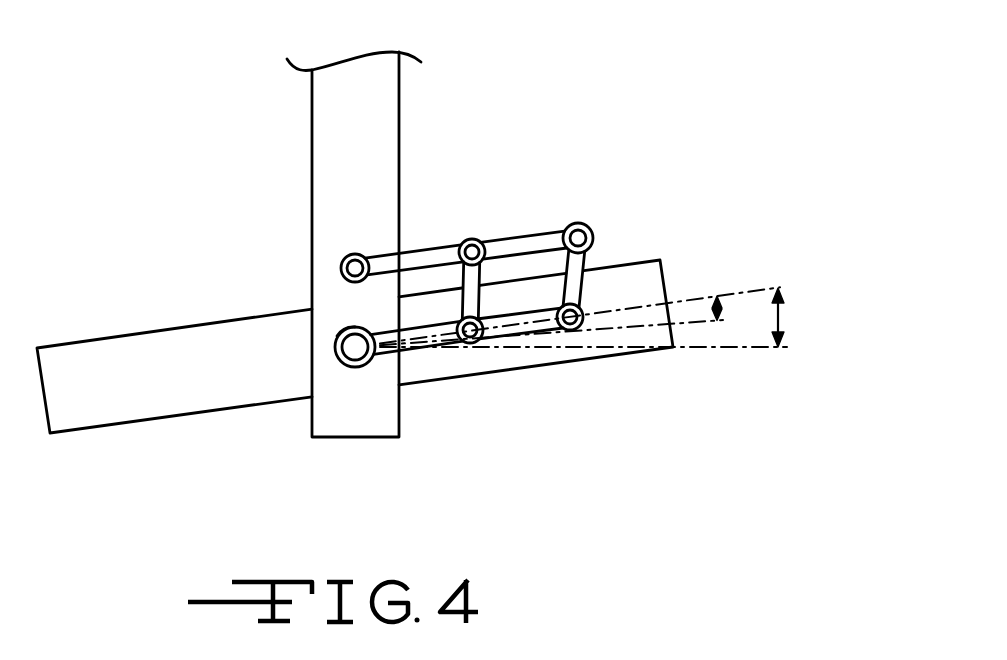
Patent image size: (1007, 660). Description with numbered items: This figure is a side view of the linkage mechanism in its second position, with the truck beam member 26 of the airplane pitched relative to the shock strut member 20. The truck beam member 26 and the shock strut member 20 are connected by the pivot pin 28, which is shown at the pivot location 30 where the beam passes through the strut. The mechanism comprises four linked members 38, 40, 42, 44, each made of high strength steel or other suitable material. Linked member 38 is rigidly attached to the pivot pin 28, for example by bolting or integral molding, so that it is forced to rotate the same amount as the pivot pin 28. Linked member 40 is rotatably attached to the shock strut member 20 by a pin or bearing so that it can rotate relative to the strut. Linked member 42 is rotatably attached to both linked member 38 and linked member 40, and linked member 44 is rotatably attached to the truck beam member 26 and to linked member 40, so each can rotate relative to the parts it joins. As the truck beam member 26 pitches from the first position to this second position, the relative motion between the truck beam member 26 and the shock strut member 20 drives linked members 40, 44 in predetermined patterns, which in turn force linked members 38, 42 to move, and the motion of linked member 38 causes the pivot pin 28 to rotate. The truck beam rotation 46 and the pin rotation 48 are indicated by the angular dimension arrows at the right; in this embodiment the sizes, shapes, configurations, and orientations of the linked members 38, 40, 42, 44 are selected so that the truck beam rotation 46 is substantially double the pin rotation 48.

The shock strut member 20 is at (300, 110).
The truck beam member 26 is at (163, 318).
The pivot pin 28 is at (328, 336).
The pivot 30 is at (353, 349).
The linked member 38 is at (402, 355).
The linked member 40 is at (435, 258).
The linked member 42 is at (478, 288).
The linked member 44 is at (578, 270).
The truck beam rotation 46 is at (782, 320).
The pin rotation 48 is at (717, 348).